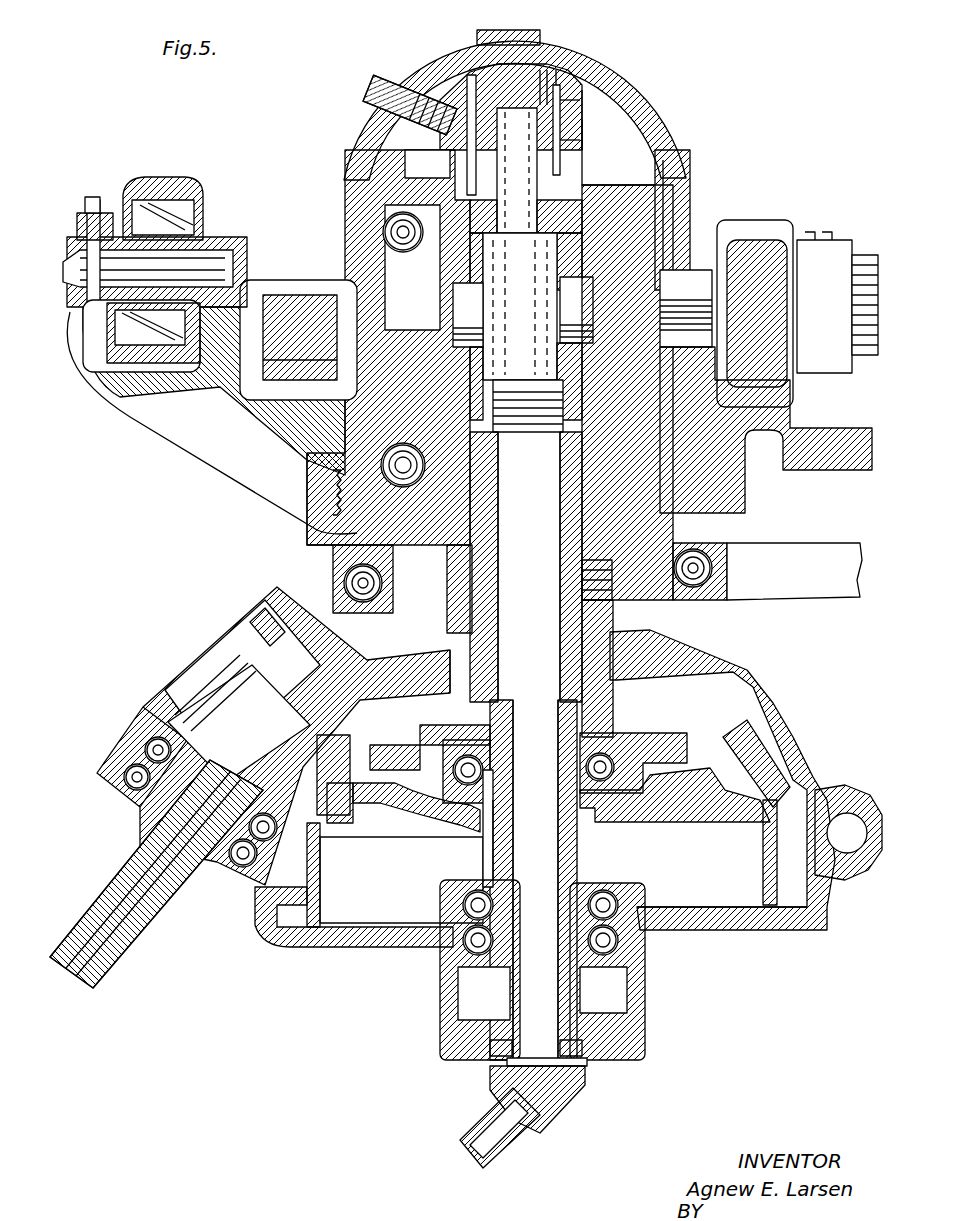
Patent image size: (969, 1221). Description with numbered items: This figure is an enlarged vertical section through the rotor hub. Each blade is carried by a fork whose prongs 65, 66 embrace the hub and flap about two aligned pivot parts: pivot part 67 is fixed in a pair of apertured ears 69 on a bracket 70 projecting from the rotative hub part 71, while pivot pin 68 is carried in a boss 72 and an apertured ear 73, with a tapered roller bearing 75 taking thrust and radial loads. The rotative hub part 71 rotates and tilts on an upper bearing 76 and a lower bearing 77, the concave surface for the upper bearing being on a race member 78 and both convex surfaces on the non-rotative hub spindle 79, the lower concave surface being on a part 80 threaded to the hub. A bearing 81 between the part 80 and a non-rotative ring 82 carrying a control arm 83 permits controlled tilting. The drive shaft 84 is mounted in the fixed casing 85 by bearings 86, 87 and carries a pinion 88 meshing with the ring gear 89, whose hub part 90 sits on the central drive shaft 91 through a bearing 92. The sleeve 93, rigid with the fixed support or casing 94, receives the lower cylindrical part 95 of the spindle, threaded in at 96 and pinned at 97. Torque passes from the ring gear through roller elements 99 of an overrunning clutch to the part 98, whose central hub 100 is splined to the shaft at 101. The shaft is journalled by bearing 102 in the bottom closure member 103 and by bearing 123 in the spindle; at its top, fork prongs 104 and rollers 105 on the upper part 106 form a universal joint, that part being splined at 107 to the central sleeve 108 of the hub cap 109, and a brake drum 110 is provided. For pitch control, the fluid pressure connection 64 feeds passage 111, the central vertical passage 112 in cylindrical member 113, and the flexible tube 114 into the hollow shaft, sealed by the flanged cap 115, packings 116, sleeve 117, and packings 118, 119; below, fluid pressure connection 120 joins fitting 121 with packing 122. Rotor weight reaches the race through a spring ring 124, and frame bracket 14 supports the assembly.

The frame bracket 14 is at (788, 455).
The fluid pressure connection 64 is at (410, 90).
The prong 65 is at (185, 180).
The prong 66 is at (752, 242).
The pivot part 67 is at (245, 262).
The pivot pin 68 is at (688, 268).
The apertured ears 69 is at (230, 236).
The bracket 70 is at (220, 387).
The rotative hub part 71 is at (340, 278).
The boss 72 is at (705, 262).
The apertured ear 73 is at (830, 258).
The tapered roller bearing 75 is at (140, 195).
The upper bearing 76 is at (680, 205).
The lower bearing 77 is at (412, 487).
The race member 78 is at (345, 205).
The non-rotative hub spindle 79 is at (440, 325).
The part 80 is at (345, 536).
The bearing 81 is at (693, 590).
The non-rotative ring 82 is at (722, 552).
The control arm 83 is at (800, 580).
The shaft 84 is at (112, 884).
The fixed casing 85 is at (193, 667).
The bearing 86 is at (262, 628).
The bearing 87 is at (150, 747).
The pinion 88 is at (195, 702).
The ring gear 89 is at (380, 745).
The hub part 90 is at (452, 740).
The central drive shaft 91 is at (498, 478).
The bearing 92 is at (483, 772).
The sleeve 93 is at (400, 600).
The fixed support or casing 94 is at (782, 705).
The lower cylindrical part 95 is at (472, 600).
The thread 96 is at (498, 690).
The pin 97 is at (582, 582).
The part 98 is at (400, 805).
The roller elements 99 is at (770, 768).
The central hub 100 is at (483, 840).
The spline 101 is at (505, 820).
The bearing 102 is at (450, 958).
The bottom closure member 103 is at (688, 930).
The fork prong 104 is at (468, 283).
The rollers 105 is at (458, 335).
The upper part of the drive shaft 106 is at (556, 244).
The splined joint 107 is at (582, 108).
The central sleeve 108 is at (582, 142).
The hub cap 109 is at (618, 76).
The brake drum 110 is at (270, 947).
The passage 111 is at (470, 75).
The central vertical passage 112 is at (542, 66).
The cylindrical member 113 is at (503, 70).
The flexible tube 114 is at (485, 232).
The flanged cap 115 is at (520, 62).
The packings 116 is at (586, 78).
The sleeve 117 is at (582, 128).
The packing 118 is at (560, 62).
The packing 119 is at (655, 150).
The fluid pressure connection 120 is at (492, 1160).
The fitting 121 is at (572, 1085).
The packing 122 is at (590, 1046).
The bearing 123 is at (505, 436).
The spring ring 124 is at (427, 164).